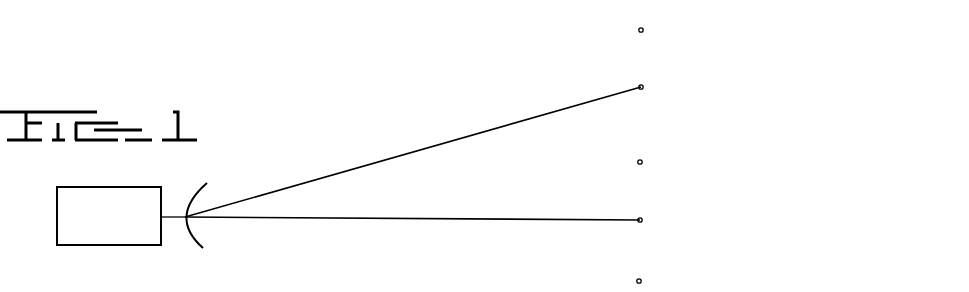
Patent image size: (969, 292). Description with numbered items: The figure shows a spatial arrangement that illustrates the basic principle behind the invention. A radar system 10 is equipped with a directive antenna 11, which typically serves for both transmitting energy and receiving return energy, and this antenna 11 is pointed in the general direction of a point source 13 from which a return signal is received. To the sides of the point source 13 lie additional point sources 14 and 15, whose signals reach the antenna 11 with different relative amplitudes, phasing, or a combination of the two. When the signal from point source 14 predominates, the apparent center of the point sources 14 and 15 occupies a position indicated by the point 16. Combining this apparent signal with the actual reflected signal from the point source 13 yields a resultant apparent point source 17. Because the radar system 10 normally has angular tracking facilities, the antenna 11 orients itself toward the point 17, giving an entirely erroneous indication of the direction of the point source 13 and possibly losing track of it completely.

The radar system 10 is at (88, 186).
The directive antenna 11 is at (189, 200).
The point source 13 is at (642, 218).
The point source 14 is at (642, 160).
The point source 15 is at (641, 279).
The point 16 is at (643, 28).
The resultant apparent point source 17 is at (643, 85).